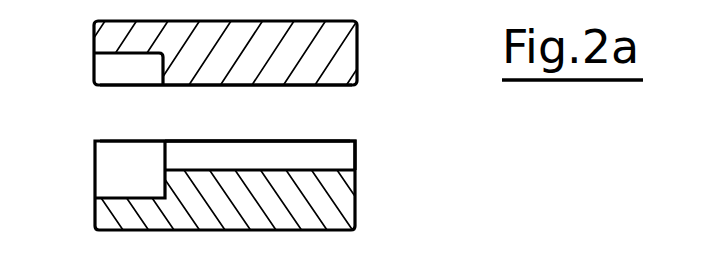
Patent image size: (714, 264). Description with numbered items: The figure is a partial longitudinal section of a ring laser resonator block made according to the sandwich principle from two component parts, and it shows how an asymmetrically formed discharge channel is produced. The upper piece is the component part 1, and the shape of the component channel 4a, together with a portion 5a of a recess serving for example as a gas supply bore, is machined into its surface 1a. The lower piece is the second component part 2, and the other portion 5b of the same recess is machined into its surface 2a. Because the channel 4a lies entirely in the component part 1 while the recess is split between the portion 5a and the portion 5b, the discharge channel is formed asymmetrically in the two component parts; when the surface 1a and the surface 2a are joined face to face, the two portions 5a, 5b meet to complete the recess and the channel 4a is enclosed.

The component part 1 is at (343, 48).
The surface of the component part 1a is at (344, 85).
The portion of recess 5a is at (102, 63).
The component part 2 is at (345, 200).
The surface of component part 2a is at (336, 141).
The component channel 4a is at (344, 153).
The other portion of recess 5b is at (103, 180).